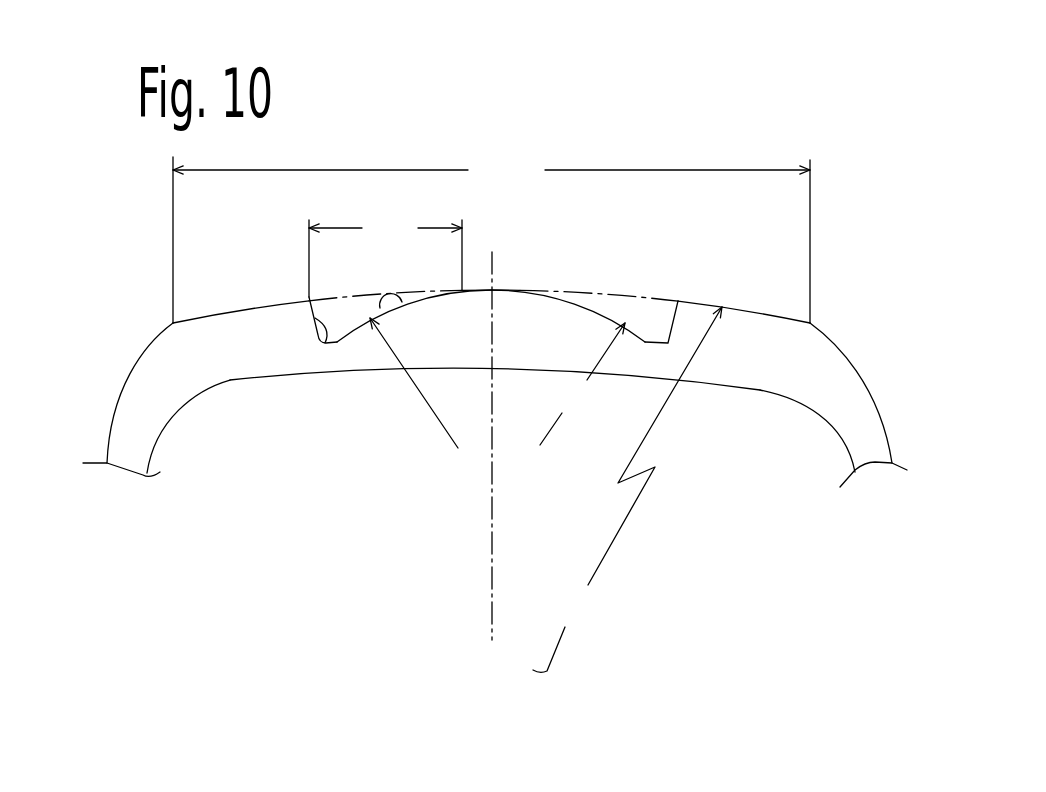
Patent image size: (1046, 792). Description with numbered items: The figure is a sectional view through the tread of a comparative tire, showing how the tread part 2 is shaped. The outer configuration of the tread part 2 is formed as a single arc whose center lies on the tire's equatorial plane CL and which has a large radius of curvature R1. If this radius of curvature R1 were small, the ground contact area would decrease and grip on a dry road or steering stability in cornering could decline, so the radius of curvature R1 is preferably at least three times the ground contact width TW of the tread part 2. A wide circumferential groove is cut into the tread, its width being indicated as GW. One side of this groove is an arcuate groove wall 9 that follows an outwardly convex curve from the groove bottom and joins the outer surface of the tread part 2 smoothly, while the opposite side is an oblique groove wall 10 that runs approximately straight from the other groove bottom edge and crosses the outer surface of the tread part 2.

The tread part 2 is at (523, 290).
The arcuate groove wall 9 is at (386, 306).
The oblique groove wall 10 is at (325, 345).
The ground contact width TW is at (491, 240).
The groove width GW is at (385, 255).
The tire equatorial plane CL is at (492, 622).
The radius of curvature of the tread part R1 is at (627, 489).